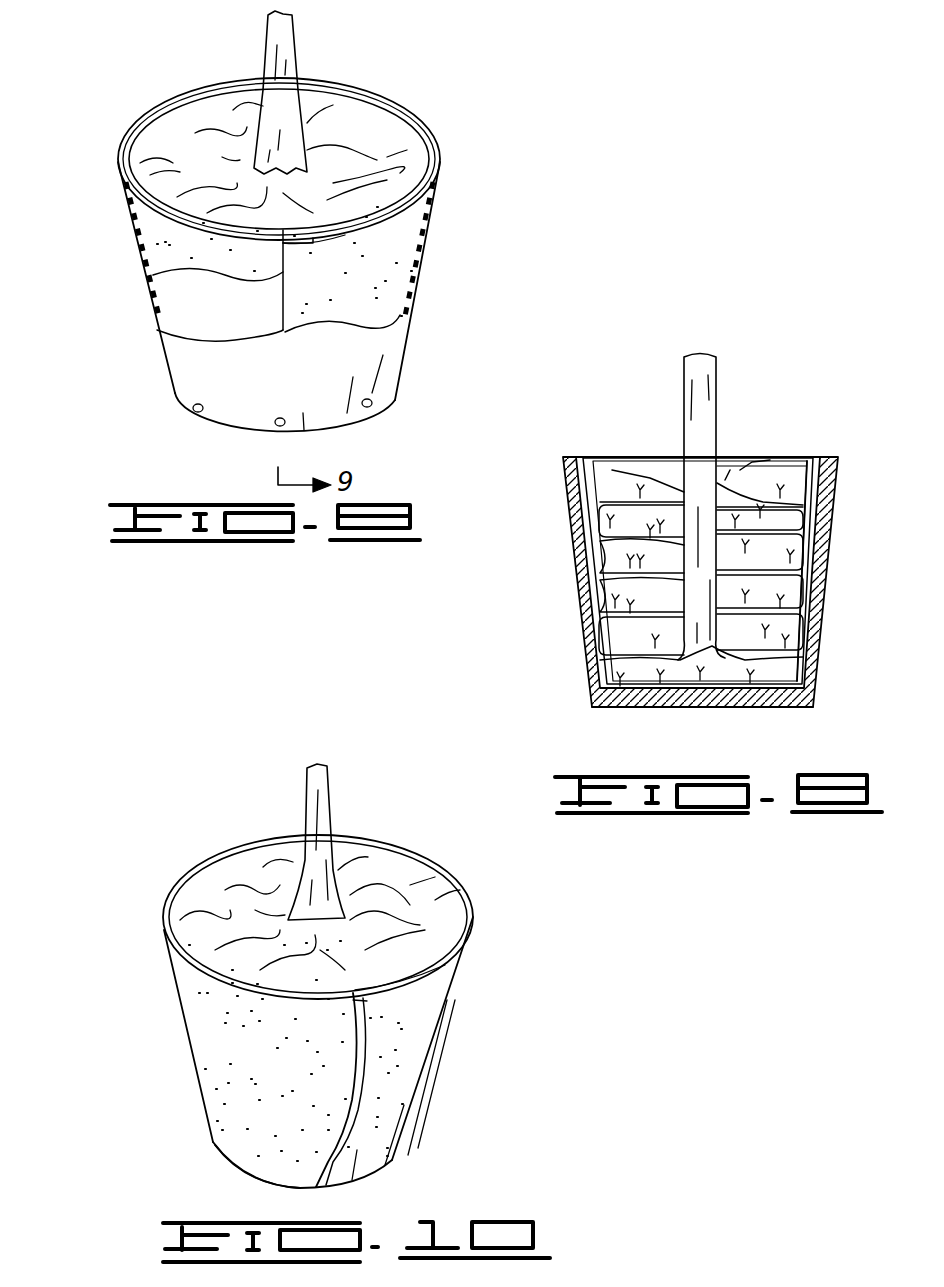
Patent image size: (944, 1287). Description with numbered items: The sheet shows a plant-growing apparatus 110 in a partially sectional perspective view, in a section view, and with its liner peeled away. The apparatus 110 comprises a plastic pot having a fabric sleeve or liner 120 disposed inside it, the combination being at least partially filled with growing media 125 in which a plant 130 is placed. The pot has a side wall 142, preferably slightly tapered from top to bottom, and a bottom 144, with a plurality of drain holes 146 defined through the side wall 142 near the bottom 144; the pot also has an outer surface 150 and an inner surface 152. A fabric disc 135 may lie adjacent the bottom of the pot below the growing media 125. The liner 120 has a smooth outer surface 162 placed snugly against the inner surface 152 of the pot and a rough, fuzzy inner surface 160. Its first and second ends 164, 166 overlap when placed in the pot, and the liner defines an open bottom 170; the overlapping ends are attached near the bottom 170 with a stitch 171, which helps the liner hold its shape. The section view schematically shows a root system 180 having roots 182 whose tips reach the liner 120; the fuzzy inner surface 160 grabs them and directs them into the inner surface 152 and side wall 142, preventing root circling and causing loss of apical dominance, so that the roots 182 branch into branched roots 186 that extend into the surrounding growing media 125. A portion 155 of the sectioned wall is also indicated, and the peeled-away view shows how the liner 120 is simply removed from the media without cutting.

In FIG. 8, the plant-growing apparatus 110 is at (455, 152).
In FIG. 9, the fabric liner 120 is at (580, 466).
In FIG. 10, the fabric liner 120 is at (470, 897).
In FIG. 8, the growing media 125 is at (352, 125).
In FIG. 10, the growing media 125 is at (383, 867).
In FIG. 8, the plant 130 is at (268, 42).
In FIG. 10, the plant 130 is at (303, 800).
In FIG. 9, the fabric disc 135 is at (792, 708).
In FIG. 8, the side wall 142 is at (130, 238).
In FIG. 9, the bottom 144 is at (625, 708).
In FIG. 8, the drain holes 146 is at (374, 410).
In FIG. 9, the outer surface 150 is at (828, 547).
In FIG. 9, the inner surface 152 is at (817, 497).
In FIG. 8, the side wall cross-section 155 is at (410, 270).
In FIG. 9, the inner surface 160 is at (795, 590).
In FIG. 9, the outer surface 162 is at (797, 468).
In FIG. 8, the first end 164 is at (165, 275).
In FIG. 8, the second end 166 is at (342, 222).
In FIG. 10, the open bottom 170 is at (247, 1181).
In FIG. 10, the stitch 171 is at (330, 1167).
In FIG. 9, the root system 180 is at (715, 477).
In FIG. 9, the roots 182 is at (590, 565).
In FIG. 9, the branched roots 186 is at (650, 480).